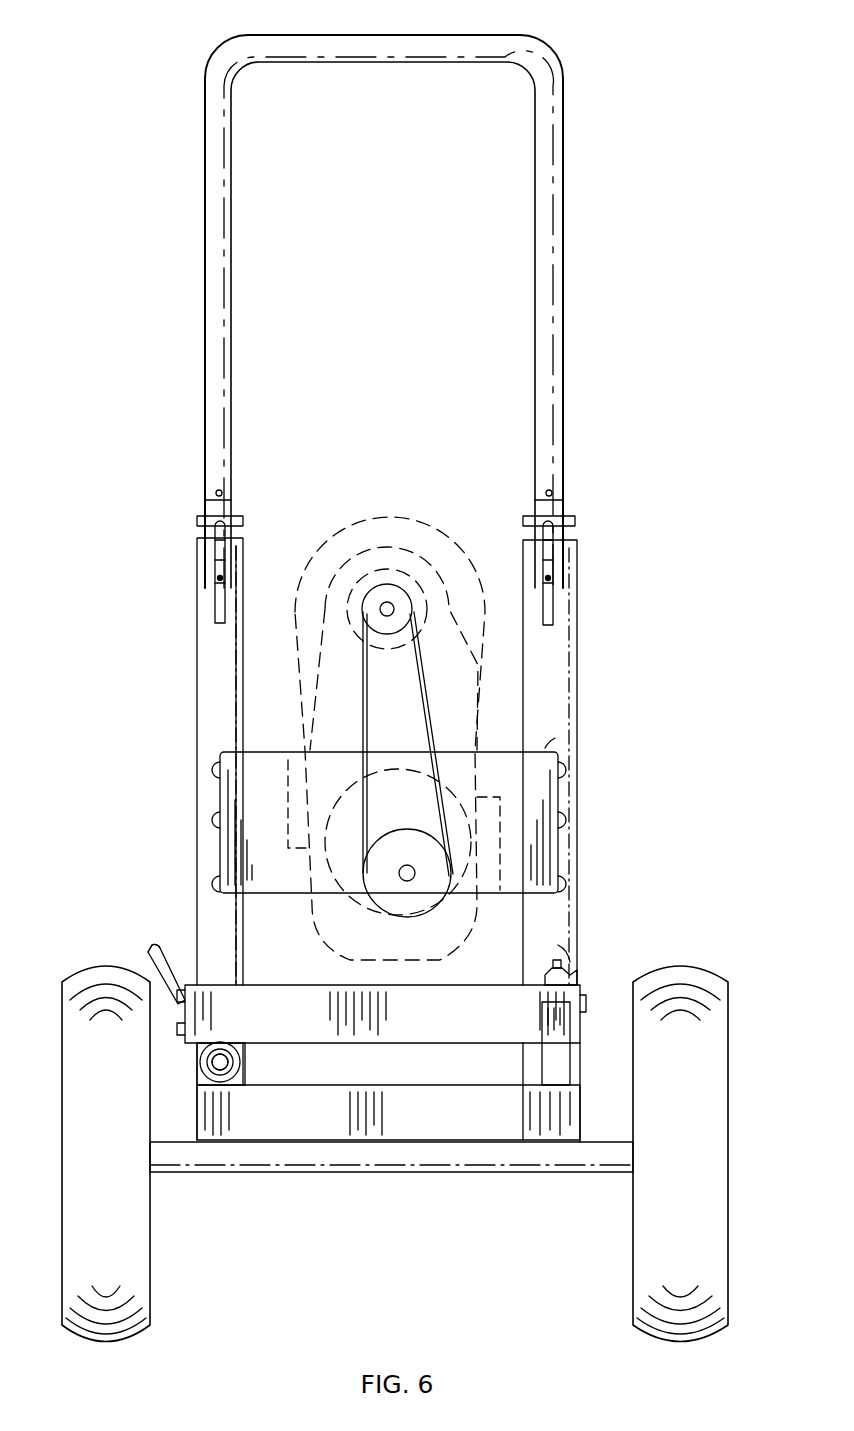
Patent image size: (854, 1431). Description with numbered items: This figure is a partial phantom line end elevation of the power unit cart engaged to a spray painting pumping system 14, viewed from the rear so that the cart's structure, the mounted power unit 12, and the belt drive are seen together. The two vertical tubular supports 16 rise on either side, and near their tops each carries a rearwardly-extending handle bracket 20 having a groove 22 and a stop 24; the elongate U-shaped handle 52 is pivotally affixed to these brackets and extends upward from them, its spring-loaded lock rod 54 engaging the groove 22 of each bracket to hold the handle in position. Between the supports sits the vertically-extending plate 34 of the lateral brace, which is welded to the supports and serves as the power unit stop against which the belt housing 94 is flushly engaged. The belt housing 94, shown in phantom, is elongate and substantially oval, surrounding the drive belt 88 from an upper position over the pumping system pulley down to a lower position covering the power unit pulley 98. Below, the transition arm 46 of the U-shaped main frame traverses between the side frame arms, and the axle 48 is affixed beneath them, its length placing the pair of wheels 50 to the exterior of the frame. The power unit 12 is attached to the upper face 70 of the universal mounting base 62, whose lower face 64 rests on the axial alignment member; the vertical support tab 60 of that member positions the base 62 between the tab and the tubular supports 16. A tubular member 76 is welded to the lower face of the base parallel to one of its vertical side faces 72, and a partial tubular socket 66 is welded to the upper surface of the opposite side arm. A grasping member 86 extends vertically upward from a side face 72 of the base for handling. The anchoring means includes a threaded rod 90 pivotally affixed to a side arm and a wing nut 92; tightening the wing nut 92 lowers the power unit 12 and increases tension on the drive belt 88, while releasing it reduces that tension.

The power unit 12 is at (548, 744).
The spray painting pumping system 14 is at (448, 537).
The vertical tubular supports 16 is at (203, 643).
The handle bracket 20 is at (217, 600).
The groove 22 is at (220, 542).
The stop 24 is at (218, 577).
The plate 34 is at (250, 850).
The transition arm 46 is at (318, 1125).
The axle 48 is at (493, 1155).
The wheels 50 is at (140, 1245).
The U-shaped handle 52 is at (428, 45).
The spring-loaded lock rod 54 is at (198, 516).
The vertical support tab 60 is at (552, 1045).
The universal mounting base 62 is at (578, 990).
The lower face 64 is at (390, 1045).
The partial tubular socket 66 is at (245, 1071).
The upper face 70 is at (218, 982).
The vertical side faces 72 is at (182, 1030).
The tubular member 76 is at (207, 1057).
The grasping member 86 is at (150, 963).
The drive belt 88 is at (365, 730).
The threaded rod 90 is at (556, 965).
The wing nut 92 is at (565, 962).
The belt housing 94 is at (306, 662).
The power unit pulley 98 is at (405, 833).